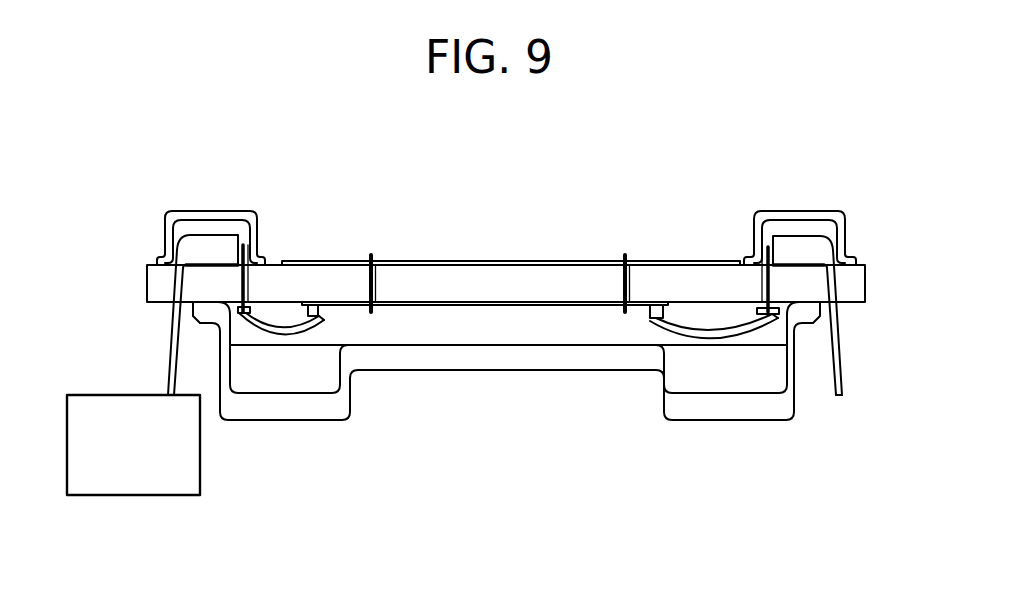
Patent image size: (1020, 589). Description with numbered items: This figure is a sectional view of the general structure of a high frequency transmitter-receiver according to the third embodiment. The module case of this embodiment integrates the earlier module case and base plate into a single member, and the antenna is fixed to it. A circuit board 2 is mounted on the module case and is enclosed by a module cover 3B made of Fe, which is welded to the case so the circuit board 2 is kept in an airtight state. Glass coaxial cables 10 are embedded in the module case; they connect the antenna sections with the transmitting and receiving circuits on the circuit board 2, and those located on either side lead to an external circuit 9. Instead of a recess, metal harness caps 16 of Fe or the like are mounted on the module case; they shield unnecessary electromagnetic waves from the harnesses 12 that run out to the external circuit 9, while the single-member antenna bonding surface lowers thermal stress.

The circuit board 2 is at (505, 305).
The module cover 3B is at (733, 413).
The external circuit 9 is at (200, 470).
The glass coaxial cables 10 is at (375, 282).
The harnesses 12 is at (170, 352).
The harness caps 16 is at (222, 210).